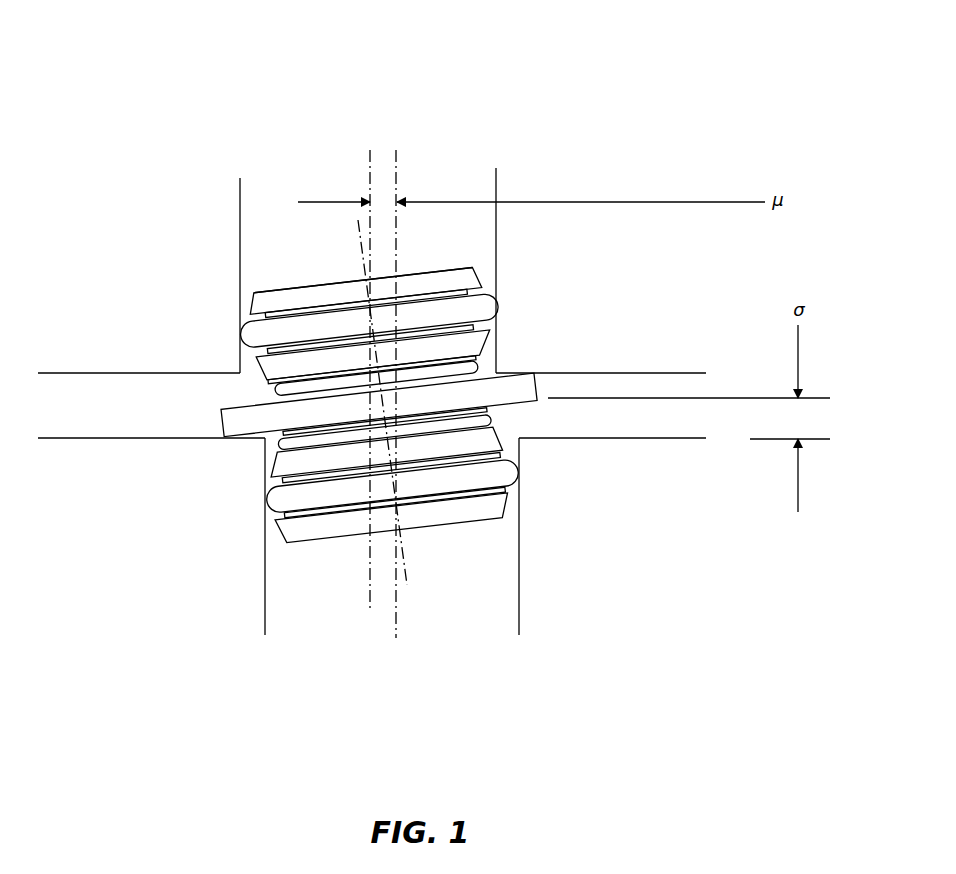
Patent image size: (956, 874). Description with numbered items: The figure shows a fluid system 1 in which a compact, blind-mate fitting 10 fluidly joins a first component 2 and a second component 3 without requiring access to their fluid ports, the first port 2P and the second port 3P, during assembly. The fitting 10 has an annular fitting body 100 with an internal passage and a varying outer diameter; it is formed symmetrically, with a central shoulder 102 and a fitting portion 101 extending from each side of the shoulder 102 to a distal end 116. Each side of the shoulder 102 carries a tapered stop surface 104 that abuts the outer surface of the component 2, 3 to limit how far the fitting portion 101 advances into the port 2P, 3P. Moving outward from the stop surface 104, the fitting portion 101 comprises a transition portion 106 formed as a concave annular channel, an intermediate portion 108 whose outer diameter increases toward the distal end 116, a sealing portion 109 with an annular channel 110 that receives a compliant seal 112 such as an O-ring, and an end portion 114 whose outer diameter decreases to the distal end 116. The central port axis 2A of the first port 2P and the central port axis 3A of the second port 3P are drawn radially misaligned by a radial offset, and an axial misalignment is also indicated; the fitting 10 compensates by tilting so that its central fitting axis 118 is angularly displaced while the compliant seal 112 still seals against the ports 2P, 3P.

The fluid system 1 is at (263, 133).
The first component 2 is at (127, 193).
The second component 3 is at (132, 602).
The fitting 10 is at (330, 178).
The first port 2P is at (495, 223).
The second port 3P is at (265, 570).
The central port axis 2A is at (369, 597).
The central port axis 3A is at (397, 593).
The fitting body 100 is at (293, 462).
The fitting portion 101 is at (246, 304).
The shoulder 102 is at (518, 388).
The stop surface 104 is at (245, 402).
The transition portion 106 is at (477, 367).
The intermediate portion 108 is at (257, 368).
The sealing portion 109 is at (515, 301).
The annular channel 110 is at (473, 328).
The compliant seal 112 is at (482, 308).
The end portion 114 is at (438, 282).
The distal end 116 is at (320, 285).
The central fitting axis 118 is at (405, 577).